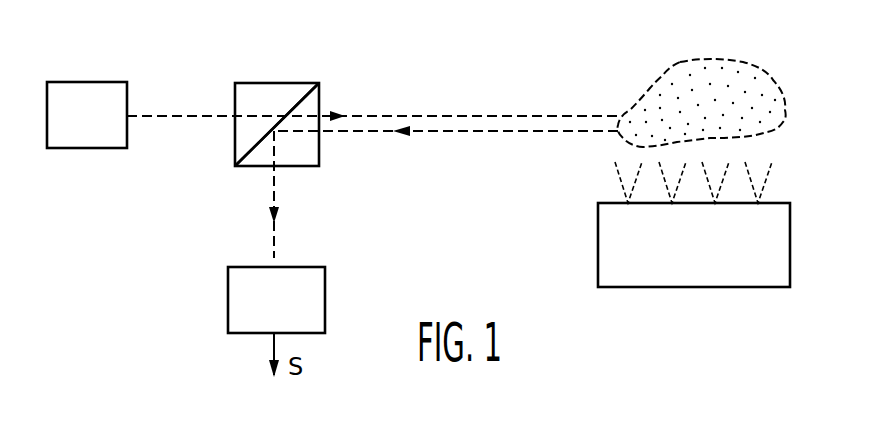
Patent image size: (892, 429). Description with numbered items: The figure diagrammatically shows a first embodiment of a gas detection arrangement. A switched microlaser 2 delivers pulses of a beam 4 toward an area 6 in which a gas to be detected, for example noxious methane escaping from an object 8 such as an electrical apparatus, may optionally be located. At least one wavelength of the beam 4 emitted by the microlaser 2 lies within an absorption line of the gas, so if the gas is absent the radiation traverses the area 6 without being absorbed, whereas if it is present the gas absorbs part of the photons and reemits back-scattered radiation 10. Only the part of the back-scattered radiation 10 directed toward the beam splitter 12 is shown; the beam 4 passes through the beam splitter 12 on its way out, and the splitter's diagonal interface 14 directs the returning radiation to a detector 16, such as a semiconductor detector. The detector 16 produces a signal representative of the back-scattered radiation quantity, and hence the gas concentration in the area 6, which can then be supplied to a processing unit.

The switched microlaser 2 is at (110, 143).
The beam 4 is at (457, 115).
The area 6 is at (675, 72).
The object 8 is at (603, 258).
The back-scattered radiation 10 is at (497, 132).
The beam splitter 12 is at (267, 87).
The partially reflecting surface 14 is at (310, 164).
The detector 16 is at (230, 302).